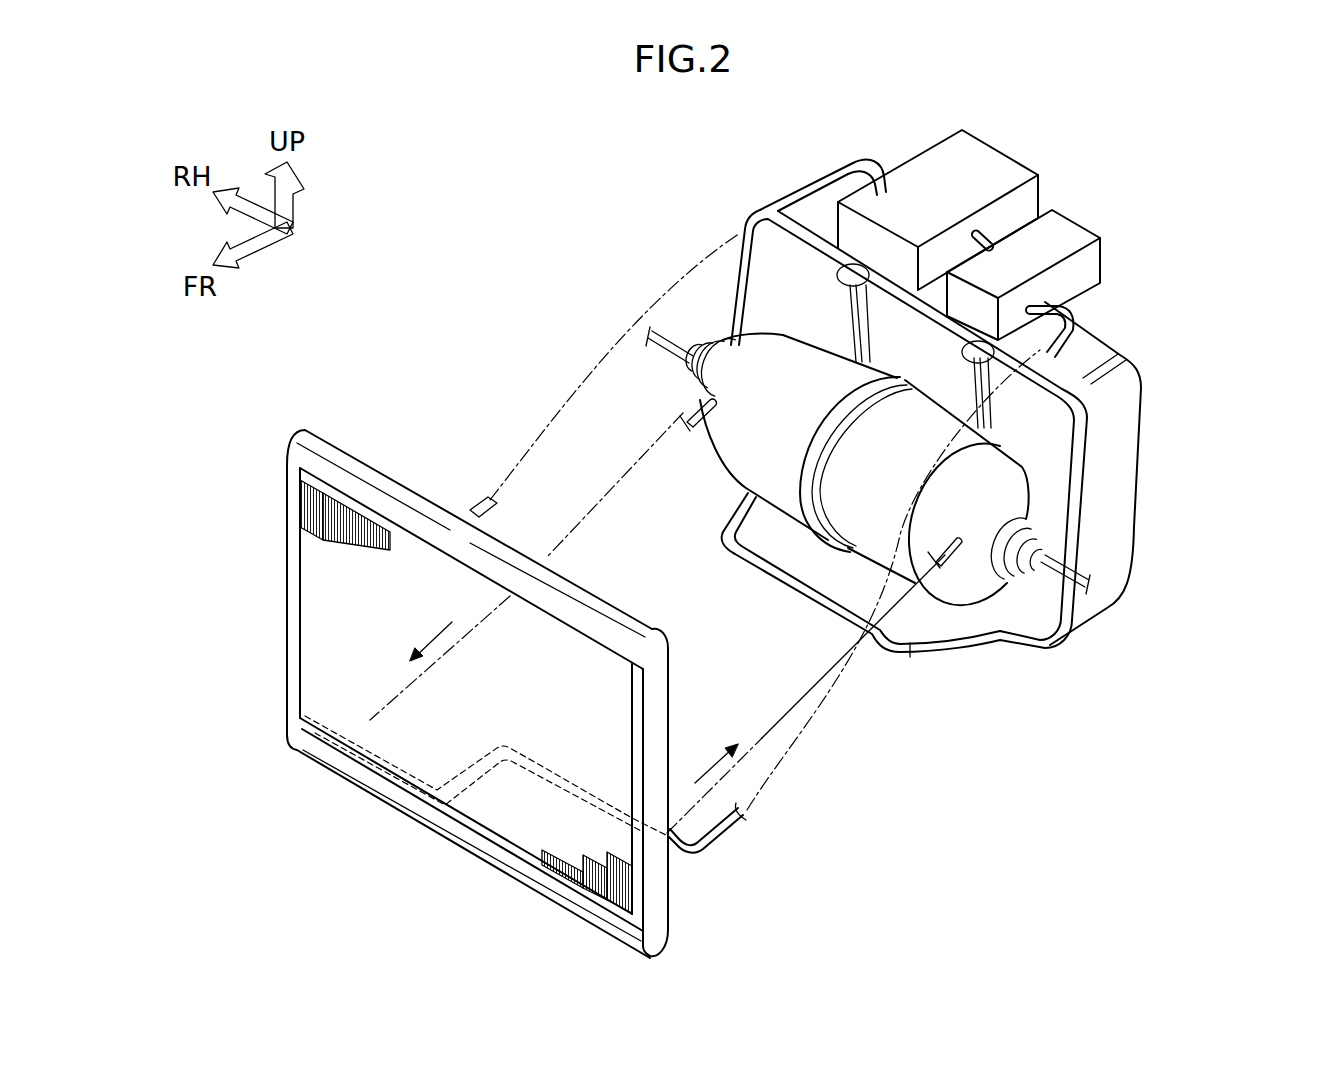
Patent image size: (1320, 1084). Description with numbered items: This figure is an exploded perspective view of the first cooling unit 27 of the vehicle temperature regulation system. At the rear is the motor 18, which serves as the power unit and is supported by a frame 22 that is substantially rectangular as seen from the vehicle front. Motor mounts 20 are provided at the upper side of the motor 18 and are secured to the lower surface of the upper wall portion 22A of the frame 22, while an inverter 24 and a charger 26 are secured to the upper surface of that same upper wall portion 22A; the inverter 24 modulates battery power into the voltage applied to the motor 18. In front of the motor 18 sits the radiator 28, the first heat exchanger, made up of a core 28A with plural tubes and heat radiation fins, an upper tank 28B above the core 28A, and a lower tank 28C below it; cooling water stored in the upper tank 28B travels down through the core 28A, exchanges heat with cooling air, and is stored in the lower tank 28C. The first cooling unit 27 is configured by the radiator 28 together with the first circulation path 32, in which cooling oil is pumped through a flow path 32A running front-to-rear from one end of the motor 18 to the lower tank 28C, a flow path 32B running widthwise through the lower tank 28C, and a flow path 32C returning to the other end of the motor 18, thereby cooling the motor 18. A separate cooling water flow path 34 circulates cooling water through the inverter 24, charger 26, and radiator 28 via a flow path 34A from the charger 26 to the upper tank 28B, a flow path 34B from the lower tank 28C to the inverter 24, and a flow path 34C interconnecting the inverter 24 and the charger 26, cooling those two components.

The motor 18 is at (730, 483).
The motor mounts 20 is at (840, 283).
The frame 22 is at (1151, 444).
The upper wall portion 22A is at (1080, 343).
The inverter 24 is at (1073, 233).
The charger 26 is at (987, 172).
The first cooling unit 27 is at (525, 350).
The radiator 28 is at (407, 630).
The core 28A is at (287, 562).
The upper tank 28B is at (358, 467).
The lower tank 28C is at (312, 757).
The first circulation path 32 is at (613, 663).
The flow path 32A is at (577, 540).
The flow path 32B is at (410, 817).
The flow path 32C is at (823, 670).
The cooling water flow path 34 is at (860, 527).
The flow path 34A is at (850, 167).
The flow path 34B is at (723, 833).
The flow path 34C is at (990, 238).